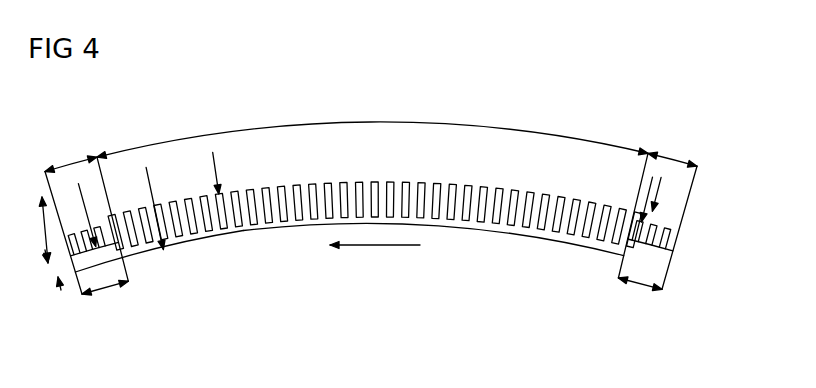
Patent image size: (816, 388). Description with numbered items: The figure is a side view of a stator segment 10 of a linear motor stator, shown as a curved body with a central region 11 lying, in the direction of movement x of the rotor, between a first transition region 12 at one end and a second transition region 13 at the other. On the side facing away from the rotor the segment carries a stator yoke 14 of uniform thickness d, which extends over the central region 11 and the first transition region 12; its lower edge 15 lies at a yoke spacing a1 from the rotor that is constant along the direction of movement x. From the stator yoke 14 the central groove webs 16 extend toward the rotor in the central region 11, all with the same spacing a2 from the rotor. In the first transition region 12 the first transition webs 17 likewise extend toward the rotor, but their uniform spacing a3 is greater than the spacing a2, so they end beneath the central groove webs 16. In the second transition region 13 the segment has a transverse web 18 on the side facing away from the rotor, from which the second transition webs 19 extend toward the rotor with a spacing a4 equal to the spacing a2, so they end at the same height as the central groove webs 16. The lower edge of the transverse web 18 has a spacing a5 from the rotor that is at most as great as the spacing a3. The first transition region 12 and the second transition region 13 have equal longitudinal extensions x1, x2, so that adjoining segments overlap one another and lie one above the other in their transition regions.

The stator segment 10 is at (512, 270).
The central region 11 is at (370, 123).
The first transition region 12 is at (67, 163).
The second transition region 13 is at (677, 162).
The stator yoke 14 is at (270, 234).
The lower edge 15 is at (215, 241).
The central groove webs 16 is at (460, 182).
The first transition webs 17 is at (78, 259).
The transverse web 18 is at (638, 242).
The second transition webs 19 is at (667, 240).
The yoke spacing a1 is at (153, 177).
The spacing of the central groove webs a2 is at (215, 160).
The spacing of the first transition webs a3 is at (86, 195).
The spacing of the second transition webs a4 is at (661, 192).
The spacing of the lower edge of the transverse web a5 is at (648, 188).
The direction of movement x is at (375, 257).
The longitudinal extension of the first transition region x1 is at (101, 289).
The longitudinal extension of the second transition region x2 is at (646, 287).
The radial dimension y is at (42, 229).
The thickness d is at (48, 272).